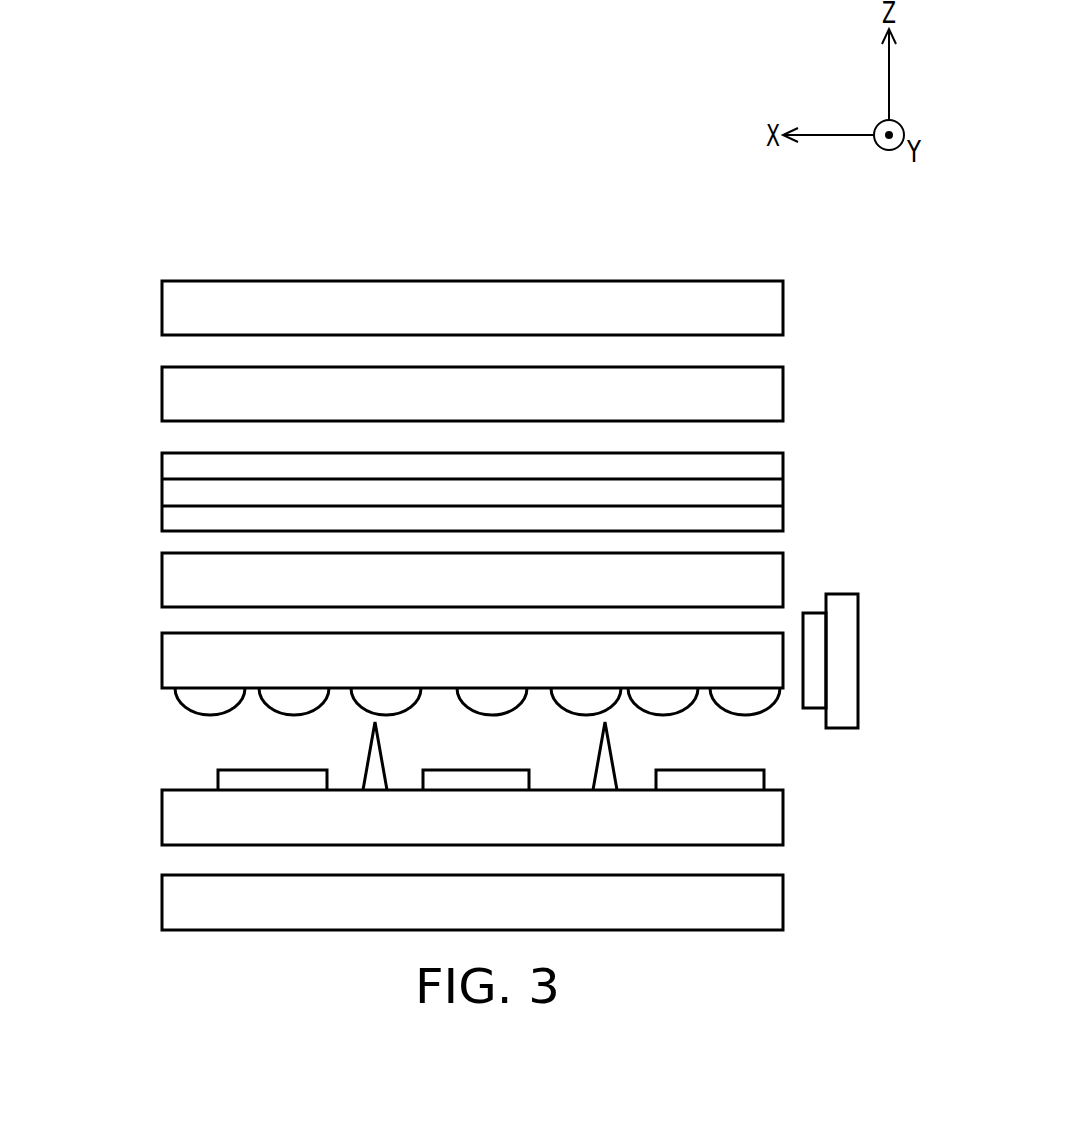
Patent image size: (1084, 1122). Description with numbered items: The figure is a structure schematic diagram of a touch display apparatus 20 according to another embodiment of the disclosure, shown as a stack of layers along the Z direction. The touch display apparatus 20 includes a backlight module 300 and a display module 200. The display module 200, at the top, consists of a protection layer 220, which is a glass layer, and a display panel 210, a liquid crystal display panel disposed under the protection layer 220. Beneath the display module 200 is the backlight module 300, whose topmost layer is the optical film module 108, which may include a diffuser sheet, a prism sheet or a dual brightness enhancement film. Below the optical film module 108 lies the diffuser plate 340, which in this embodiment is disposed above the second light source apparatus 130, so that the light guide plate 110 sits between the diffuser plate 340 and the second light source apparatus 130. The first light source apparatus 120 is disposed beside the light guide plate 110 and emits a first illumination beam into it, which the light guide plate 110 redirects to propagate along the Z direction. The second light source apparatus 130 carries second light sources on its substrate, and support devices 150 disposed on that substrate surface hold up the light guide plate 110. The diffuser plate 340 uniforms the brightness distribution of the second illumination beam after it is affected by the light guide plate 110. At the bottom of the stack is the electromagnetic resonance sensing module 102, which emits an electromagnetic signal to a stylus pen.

The touch display apparatus 20 is at (810, 252).
The display module 200 is at (162, 281).
The protection layer 220 is at (783, 307).
The display panel 210 is at (783, 390).
The backlight module 300 is at (150, 453).
The optical film module 108 is at (783, 492).
The diffuser plate 340 is at (783, 567).
The light guide plate 110 is at (778, 633).
The first light source apparatus 120 is at (858, 633).
The support device 150 is at (368, 756).
The second light source apparatus 130 is at (783, 792).
The electromagnetic resonance sensing module 102 is at (783, 900).